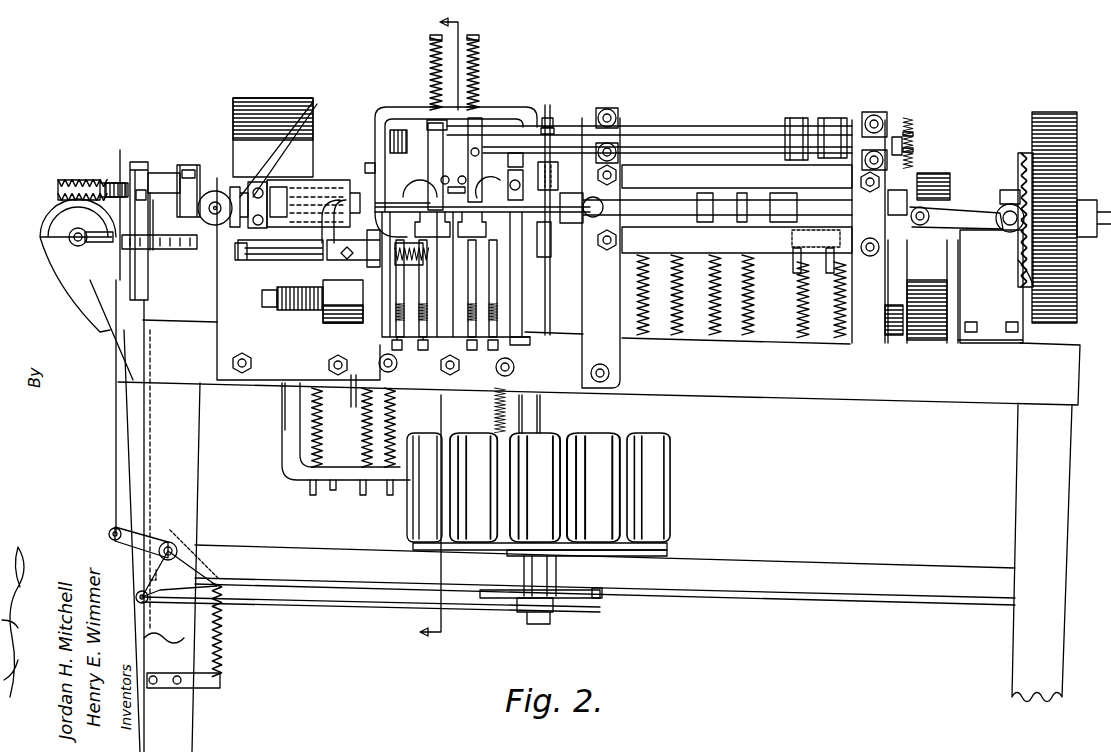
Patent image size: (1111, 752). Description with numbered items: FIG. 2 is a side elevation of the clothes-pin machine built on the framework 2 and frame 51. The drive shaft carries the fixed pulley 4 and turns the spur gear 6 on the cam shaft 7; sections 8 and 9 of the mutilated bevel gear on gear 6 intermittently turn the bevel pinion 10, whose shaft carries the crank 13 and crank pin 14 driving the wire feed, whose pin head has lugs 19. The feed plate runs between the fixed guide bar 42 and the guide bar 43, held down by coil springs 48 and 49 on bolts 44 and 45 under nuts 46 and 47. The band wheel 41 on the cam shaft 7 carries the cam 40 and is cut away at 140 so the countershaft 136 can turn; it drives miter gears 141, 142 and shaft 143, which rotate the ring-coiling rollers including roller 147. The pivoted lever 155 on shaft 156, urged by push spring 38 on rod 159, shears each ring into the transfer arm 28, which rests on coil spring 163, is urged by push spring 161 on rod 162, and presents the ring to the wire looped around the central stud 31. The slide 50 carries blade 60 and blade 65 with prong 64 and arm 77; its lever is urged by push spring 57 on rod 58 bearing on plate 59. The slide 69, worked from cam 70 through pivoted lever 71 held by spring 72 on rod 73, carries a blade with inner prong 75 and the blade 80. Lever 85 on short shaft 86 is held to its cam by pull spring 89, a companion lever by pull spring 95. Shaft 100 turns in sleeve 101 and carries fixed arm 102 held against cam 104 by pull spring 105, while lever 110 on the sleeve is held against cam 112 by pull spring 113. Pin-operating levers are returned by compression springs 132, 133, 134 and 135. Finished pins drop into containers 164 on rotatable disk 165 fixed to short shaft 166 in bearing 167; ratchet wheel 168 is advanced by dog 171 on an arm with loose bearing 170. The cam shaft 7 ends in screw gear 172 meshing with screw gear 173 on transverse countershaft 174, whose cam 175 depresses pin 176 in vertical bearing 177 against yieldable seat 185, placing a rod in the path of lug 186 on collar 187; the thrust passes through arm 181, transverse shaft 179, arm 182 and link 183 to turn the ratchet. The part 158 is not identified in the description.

The framework 2 is at (716, 396).
The pulley 4 is at (950, 173).
The spur gear 6 is at (1032, 122).
The cam shaft 7 is at (117, 180).
The mutilated bevel gear section 8 is at (1016, 272).
The mutilated bevel gear section 9 is at (1018, 160).
The bevel pinion 10 is at (1005, 234).
The crank 13 is at (978, 215).
The crank pin 14 is at (925, 226).
The lugs 19 is at (745, 218).
The transfer arm 28 is at (358, 238).
The central stud 31 is at (347, 398).
The push spring 38 is at (292, 289).
The cam 40 is at (277, 149).
The band wheel 41 is at (270, 98).
The guide bar 42 is at (737, 240).
The guide bar 43 is at (737, 177).
The bolt 44 is at (548, 112).
The bolt 45 is at (910, 118).
The nut 46 is at (554, 125).
The nut 47 is at (914, 133).
The coil spring 48 is at (558, 160).
The coil spring 49 is at (914, 152).
The slide 50 is at (484, 352).
The frame 51 is at (515, 353).
The push spring 57 is at (490, 410).
The rod 58 is at (490, 440).
The bearing plate 59 is at (332, 492).
The blade 60 is at (497, 288).
The prong 64 is at (515, 212).
The blade 65 is at (474, 288).
The slide 69 is at (416, 352).
The cam 70 is at (399, 288).
The pivoted lever 71 is at (432, 224).
The spring 72 is at (398, 412).
The rod 73 is at (393, 490).
The inner prong 75 is at (391, 224).
The laterally extending arm 77 is at (472, 224).
The blade 80 is at (427, 288).
The lever 85 is at (483, 113).
The short shaft 86 is at (368, 163).
The pull spring 89 is at (480, 73).
The pull spring 95 is at (425, 68).
The shaft 100 is at (897, 137).
The sleeve 101 is at (680, 118).
The fixed arm 102 is at (835, 112).
The cam 104 is at (826, 275).
The pull spring 105 is at (834, 312).
The lever 110 is at (785, 131).
The cam 112 is at (790, 275).
The pull spring 113 is at (797, 305).
The compression spring 132 is at (750, 339).
The compression spring 133 is at (709, 303).
The compression spring 134 is at (683, 339).
The compression spring 135 is at (648, 339).
The countershaft 136 is at (205, 222).
The cut-away section 140 is at (313, 203).
The miter gear 141 is at (200, 175).
The miter gear 142 is at (233, 227).
The shaft 143 is at (262, 181).
The roller 147 is at (342, 198).
The pivoted lever 155 is at (333, 296).
The shaft 156 is at (240, 263).
The bracket 158 is at (319, 425).
The rod 159 is at (308, 492).
The push spring 161 is at (335, 408).
The rod 162 is at (364, 497).
The coil spring 163 is at (401, 253).
The containers 164 is at (662, 487).
The rotatable disk 165 is at (600, 557).
The short shaft 166 is at (528, 624).
The bearing 167 is at (522, 572).
The ratchet wheel 168 is at (600, 602).
The loose bearing 170 is at (560, 603).
The dog 171 is at (110, 305).
The screw gear 172 is at (78, 177).
The screw gear 173 is at (42, 225).
The transverse countershaft 174 is at (74, 247).
The cam 175 is at (100, 244).
The pin 176 is at (182, 221).
The vertical bearing 177 is at (150, 253).
The transverse shaft 179 is at (172, 542).
The arm 181 is at (133, 550).
The arm 182 is at (162, 582).
The link 183 is at (262, 606).
The yieldable seat 185 is at (165, 227).
The lug 186 is at (157, 191).
The collar 187 is at (147, 160).